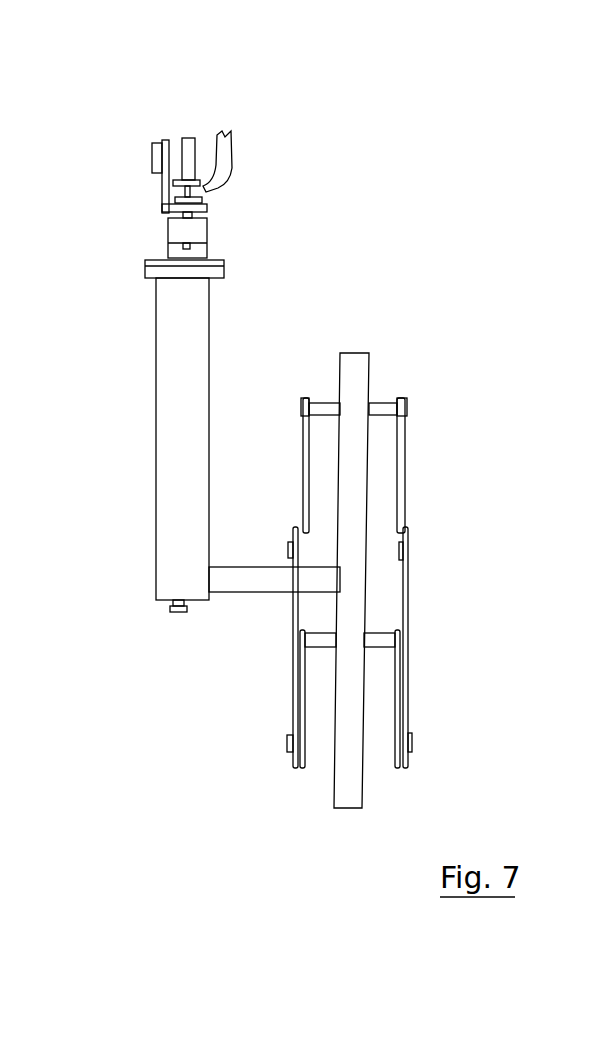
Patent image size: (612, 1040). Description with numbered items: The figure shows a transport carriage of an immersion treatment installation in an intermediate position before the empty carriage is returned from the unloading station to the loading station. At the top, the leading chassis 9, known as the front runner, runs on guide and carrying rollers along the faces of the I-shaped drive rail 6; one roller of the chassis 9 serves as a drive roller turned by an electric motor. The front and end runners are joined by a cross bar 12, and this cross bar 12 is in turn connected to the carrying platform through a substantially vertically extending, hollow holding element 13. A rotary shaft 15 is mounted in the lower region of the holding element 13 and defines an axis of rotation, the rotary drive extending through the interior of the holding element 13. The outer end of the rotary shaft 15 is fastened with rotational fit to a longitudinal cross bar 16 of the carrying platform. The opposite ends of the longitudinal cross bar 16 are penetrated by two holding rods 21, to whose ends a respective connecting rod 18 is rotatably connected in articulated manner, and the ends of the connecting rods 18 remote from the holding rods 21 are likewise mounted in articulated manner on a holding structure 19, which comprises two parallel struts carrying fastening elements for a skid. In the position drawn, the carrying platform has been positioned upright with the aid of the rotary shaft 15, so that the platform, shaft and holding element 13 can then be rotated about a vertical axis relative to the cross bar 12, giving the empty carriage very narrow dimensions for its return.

The chassis 9 is at (186, 158).
The drive rail 6 is at (205, 190).
The cross bar 12 is at (195, 231).
The holding element 13 is at (180, 338).
The rotary shaft 15 is at (241, 580).
The longitudinal cross bar 16 is at (356, 372).
The connecting rod 18 is at (303, 462).
The holding structure 19 is at (494, 615).
The holding rod 21 is at (385, 410).